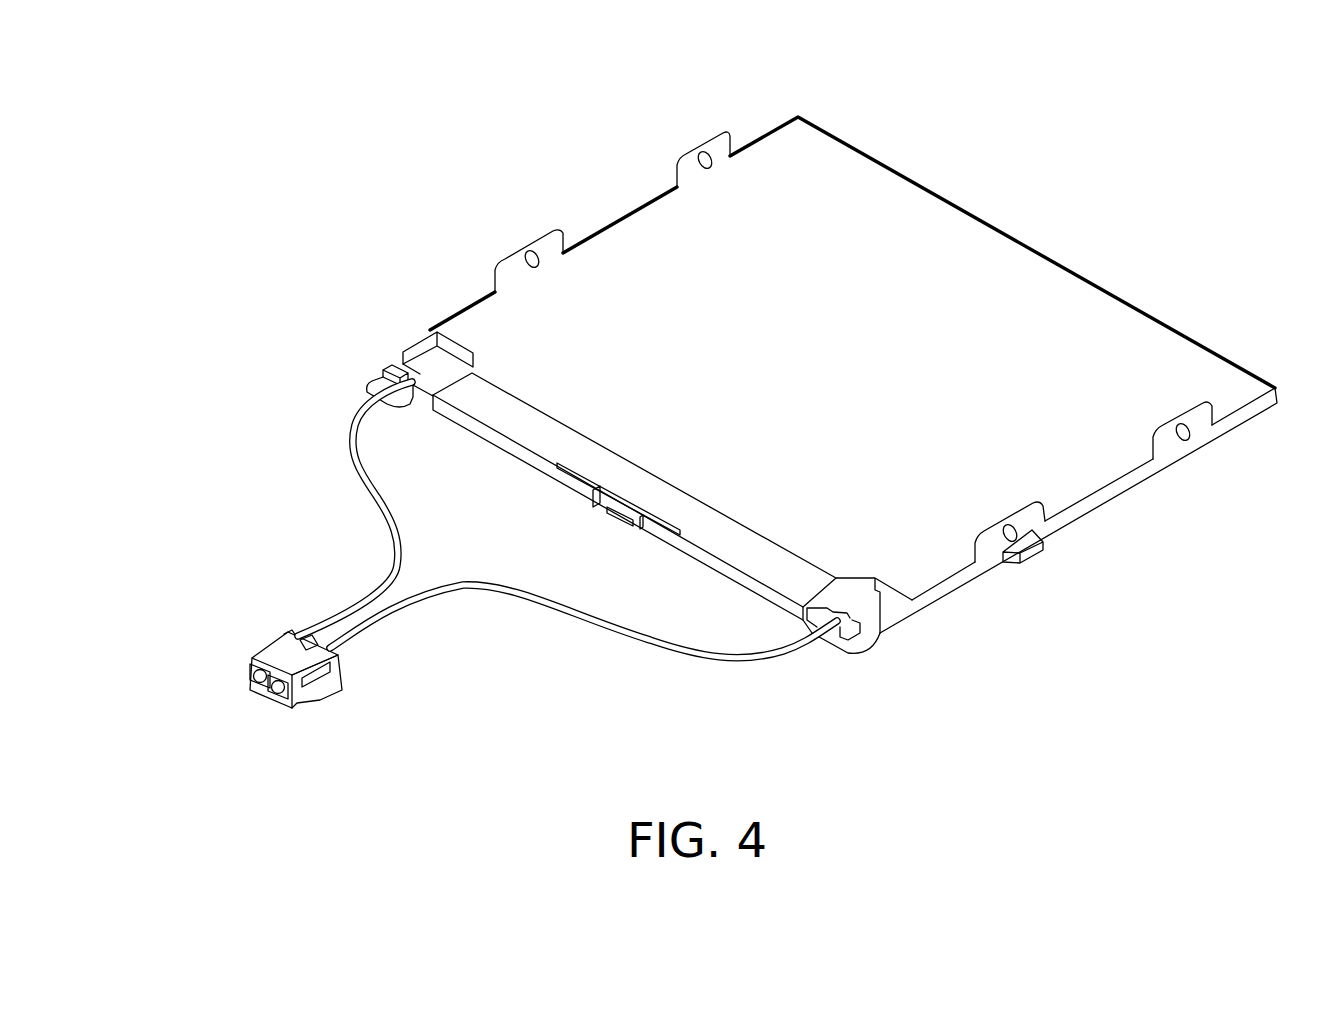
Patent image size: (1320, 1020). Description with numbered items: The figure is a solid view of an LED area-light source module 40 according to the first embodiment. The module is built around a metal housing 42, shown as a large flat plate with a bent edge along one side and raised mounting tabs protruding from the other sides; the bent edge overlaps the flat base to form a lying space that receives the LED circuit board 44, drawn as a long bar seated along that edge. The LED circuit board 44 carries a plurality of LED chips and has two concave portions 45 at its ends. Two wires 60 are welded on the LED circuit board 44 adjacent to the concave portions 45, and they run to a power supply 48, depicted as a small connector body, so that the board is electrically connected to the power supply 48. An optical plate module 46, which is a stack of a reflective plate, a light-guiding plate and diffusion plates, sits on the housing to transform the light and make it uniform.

The LED area-light source module 40 is at (1077, 237).
The metal housing 42 is at (1097, 503).
The LED circuit board 44 is at (428, 367).
The concave portions 45 is at (400, 362).
The optical plate module 46 is at (920, 580).
The power supply 48 is at (292, 656).
The wires 60 is at (355, 605).